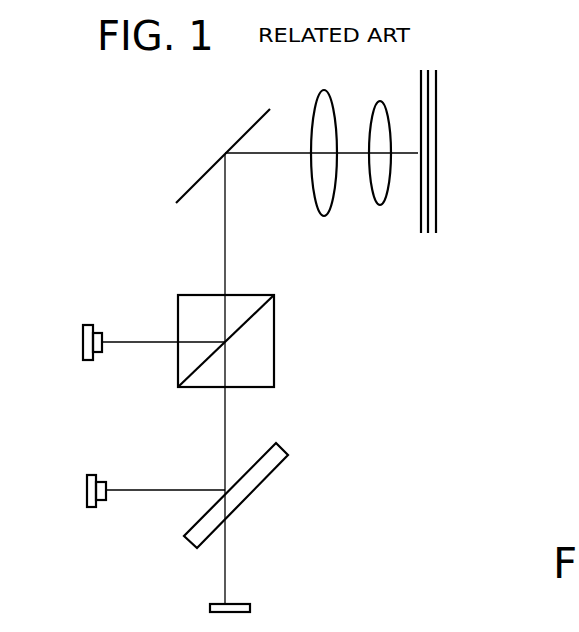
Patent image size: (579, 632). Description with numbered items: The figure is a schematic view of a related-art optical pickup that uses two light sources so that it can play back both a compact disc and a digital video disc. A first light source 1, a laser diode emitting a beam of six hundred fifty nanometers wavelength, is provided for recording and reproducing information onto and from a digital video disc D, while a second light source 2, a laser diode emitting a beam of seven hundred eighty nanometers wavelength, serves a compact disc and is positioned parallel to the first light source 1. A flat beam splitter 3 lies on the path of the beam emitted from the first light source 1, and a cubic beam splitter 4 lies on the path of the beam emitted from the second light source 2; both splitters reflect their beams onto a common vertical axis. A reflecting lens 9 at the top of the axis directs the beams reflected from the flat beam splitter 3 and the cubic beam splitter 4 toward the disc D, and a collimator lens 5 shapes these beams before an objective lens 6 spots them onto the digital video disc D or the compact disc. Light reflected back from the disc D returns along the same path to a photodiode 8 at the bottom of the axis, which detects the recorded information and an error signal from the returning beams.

The first light source 1 is at (87, 492).
The second light source 2 is at (83, 340).
The flat beam splitter 3 is at (258, 490).
The cubic beam splitter 4 is at (274, 342).
The collimator lens 5 is at (315, 200).
The objective lens 6 is at (371, 190).
The photodiode 8 is at (245, 604).
The reflecting lens 9 is at (200, 176).
The digital video disc D is at (438, 190).